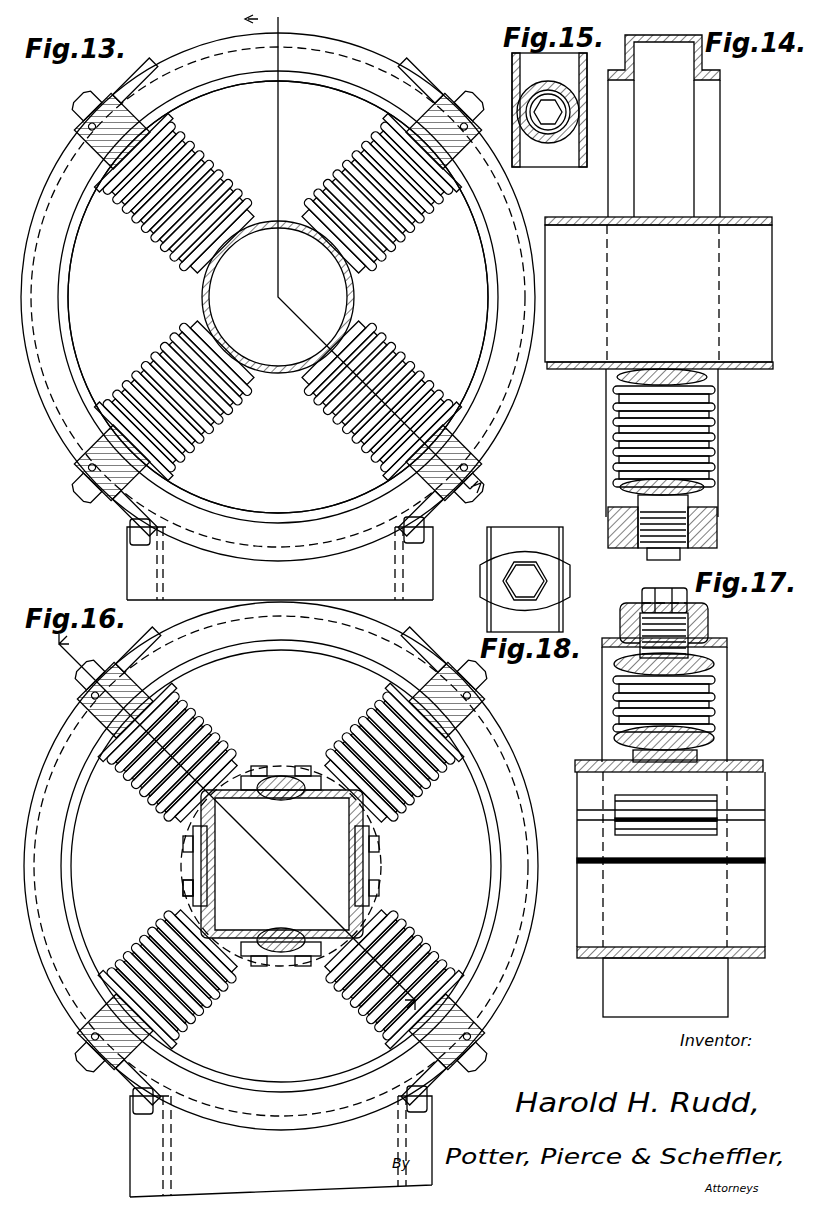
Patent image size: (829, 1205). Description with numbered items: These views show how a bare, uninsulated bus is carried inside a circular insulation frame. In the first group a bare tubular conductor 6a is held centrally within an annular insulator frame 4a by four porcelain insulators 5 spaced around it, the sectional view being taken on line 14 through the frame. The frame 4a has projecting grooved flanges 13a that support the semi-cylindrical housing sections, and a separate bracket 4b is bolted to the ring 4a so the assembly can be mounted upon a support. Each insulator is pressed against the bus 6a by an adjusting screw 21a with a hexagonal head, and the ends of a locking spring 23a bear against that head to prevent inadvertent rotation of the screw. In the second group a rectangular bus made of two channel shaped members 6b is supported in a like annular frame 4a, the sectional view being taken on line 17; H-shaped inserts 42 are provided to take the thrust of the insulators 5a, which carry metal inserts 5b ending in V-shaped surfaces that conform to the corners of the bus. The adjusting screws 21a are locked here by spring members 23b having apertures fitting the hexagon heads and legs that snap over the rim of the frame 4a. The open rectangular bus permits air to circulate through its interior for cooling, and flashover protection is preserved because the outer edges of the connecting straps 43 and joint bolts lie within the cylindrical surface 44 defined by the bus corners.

In FIG. 13, the annular insulator frame 4a is at (278, 295).
In FIG. 14, the annular insulator frame 4a is at (664, 44).
In FIG. 18, the annular insulator frame 4a is at (520, 532).
In FIG. 17, the annular insulator frame 4a is at (712, 640).
In FIG. 13, the bracket 4b is at (256, 558).
In FIG. 16, the bracket 4b is at (256, 1141).
In FIG. 13, the porcelain insulator 5 is at (278, 297).
In FIG. 14, the porcelain insulator 5 is at (606, 438).
In FIG. 17, the insulator 5a is at (716, 702).
In FIG. 16, the insulator 5a is at (281, 866).
In FIG. 17, the metal insert 5b is at (652, 758).
In FIG. 16, the metal insert 5b is at (339, 837).
In FIG. 13, the bare tubular conductor 6a is at (298, 297).
In FIG. 14, the bare tubular conductor 6a is at (578, 218).
In FIG. 17, the channel shaped member 6b is at (578, 812).
In FIG. 16, the channel shaped member 6b is at (281, 866).
In FIG. 13, the grooved flange 13a is at (278, 294).
In FIG. 14, the grooved flange 13a is at (700, 86).
In FIG. 13, the section line 14— 14 is at (378, 250).
In FIG. 16, the section line 17— 17 is at (226, 822).
In FIG. 13, the adjusting screw 21a is at (263, 296).
In FIG. 15, the adjusting screw 21a is at (530, 98).
In FIG. 14, the adjusting screw 21a is at (638, 500).
In FIG. 18, the adjusting screw 21a is at (530, 580).
In FIG. 17, the adjusting screw 21a is at (650, 596).
In FIG. 16, the adjusting screw 21a is at (279, 880).
In FIG. 15, the locking spring 23a is at (548, 135).
In FIG. 18, the spring member 23b is at (488, 592).
In FIG. 17, the spring member 23b is at (622, 613).
In FIG. 16, the spring member 23b is at (277, 866).
In FIG. 17, the H-shaped insert 42 is at (664, 832).
In FIG. 16, the H-shaped insert 42 is at (281, 860).
In FIG. 16, the connecting strap 43 is at (280, 880).
In FIG. 16, the cylindrical surface 44 is at (164, 884).